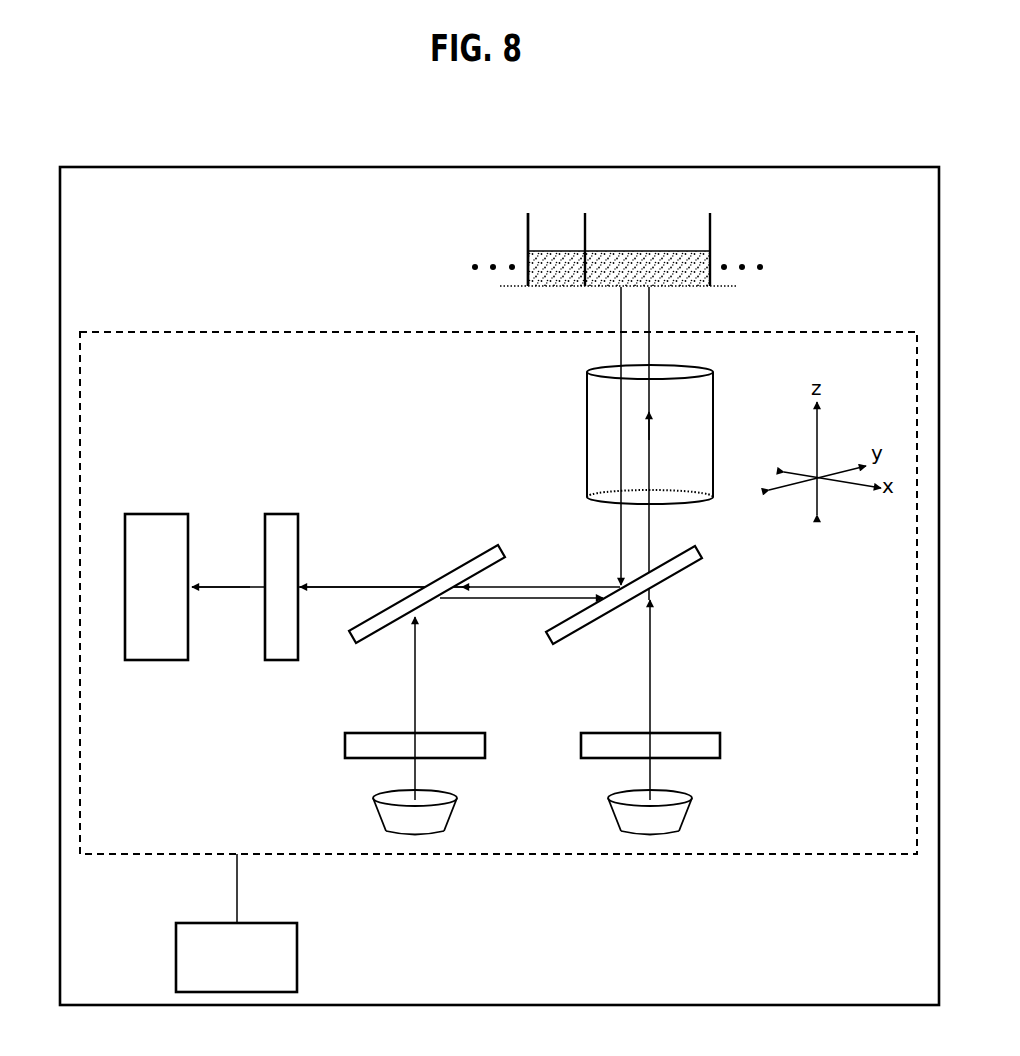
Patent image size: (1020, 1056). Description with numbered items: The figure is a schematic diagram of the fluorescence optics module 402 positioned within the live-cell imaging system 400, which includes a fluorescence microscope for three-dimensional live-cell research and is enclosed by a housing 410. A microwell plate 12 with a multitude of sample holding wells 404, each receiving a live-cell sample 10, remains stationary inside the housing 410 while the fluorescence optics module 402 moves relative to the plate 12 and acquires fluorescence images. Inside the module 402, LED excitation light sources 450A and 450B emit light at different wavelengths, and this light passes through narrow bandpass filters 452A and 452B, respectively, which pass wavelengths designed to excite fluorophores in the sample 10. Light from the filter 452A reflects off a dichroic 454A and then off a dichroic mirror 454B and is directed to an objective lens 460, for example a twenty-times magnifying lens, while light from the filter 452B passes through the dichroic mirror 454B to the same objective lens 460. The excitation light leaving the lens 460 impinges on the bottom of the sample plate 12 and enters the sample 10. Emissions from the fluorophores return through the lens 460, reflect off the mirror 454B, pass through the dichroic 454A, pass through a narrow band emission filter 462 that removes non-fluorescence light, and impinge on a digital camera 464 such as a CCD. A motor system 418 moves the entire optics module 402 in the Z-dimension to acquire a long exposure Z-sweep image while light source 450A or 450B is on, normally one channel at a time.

The live-cell imaging system 400 is at (786, 145).
The housing 410 is at (424, 166).
The fluorescence optics module 402 is at (342, 860).
The sample holding wells 404 is at (675, 236).
The microwell plate 12 is at (523, 240).
The sample 10 is at (563, 250).
The objective lens 460 is at (713, 427).
The narrow band emission filter 462 is at (298, 537).
The digital camera 464 is at (188, 640).
The dichroic 454A is at (497, 551).
The dichroic mirror 454B is at (699, 558).
The narrow bandpass filter 452A is at (465, 735).
The narrow bandpass filter 452B is at (695, 733).
The LED excitation light source 450A is at (455, 812).
The LED excitation light source 450B is at (690, 815).
The motor system 418 is at (297, 967).